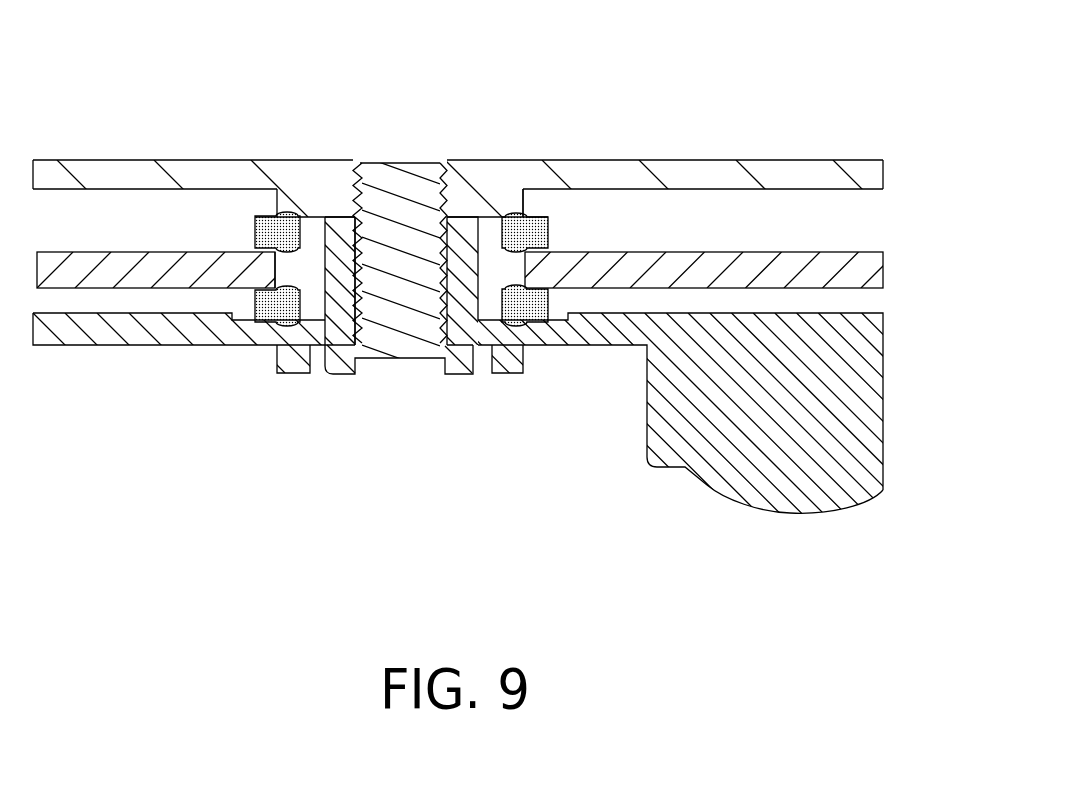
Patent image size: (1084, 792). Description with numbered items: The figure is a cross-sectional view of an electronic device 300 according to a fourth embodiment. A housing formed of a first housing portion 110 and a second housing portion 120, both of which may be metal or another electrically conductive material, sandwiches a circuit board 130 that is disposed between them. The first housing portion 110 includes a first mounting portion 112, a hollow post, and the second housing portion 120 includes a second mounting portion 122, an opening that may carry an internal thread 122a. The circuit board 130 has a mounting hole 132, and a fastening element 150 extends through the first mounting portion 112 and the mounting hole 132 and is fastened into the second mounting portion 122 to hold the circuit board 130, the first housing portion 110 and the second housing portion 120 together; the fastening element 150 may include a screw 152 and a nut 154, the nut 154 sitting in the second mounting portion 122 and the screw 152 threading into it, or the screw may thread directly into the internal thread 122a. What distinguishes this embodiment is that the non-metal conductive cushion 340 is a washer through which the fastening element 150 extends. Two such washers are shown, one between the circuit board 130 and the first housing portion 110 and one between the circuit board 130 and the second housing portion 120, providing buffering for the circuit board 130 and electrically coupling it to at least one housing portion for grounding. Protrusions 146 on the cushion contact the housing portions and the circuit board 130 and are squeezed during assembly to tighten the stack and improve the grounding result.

The electronic device 300 is at (652, 622).
The first housing portion 110 is at (168, 328).
The first mounting portion 112 is at (462, 320).
The second housing portion 120 is at (185, 170).
The second mounting portion 122 is at (457, 188).
The internal thread 122a is at (441, 160).
The circuit board 130 is at (127, 268).
The mounting hole 132 is at (277, 272).
The protrusions 146 is at (258, 230).
The fastening element 150 is at (347, 216).
The screw 152 is at (398, 180).
The nut 154 is at (358, 168).
The non-metal conductive cushion 340 is at (533, 225).